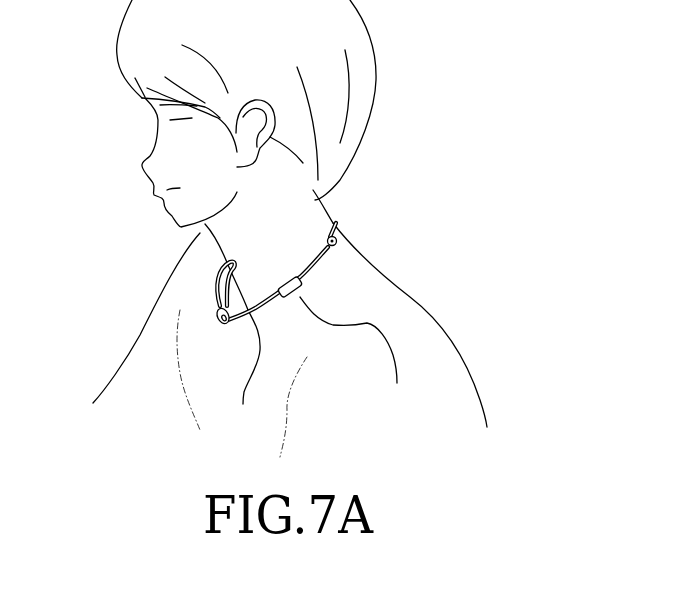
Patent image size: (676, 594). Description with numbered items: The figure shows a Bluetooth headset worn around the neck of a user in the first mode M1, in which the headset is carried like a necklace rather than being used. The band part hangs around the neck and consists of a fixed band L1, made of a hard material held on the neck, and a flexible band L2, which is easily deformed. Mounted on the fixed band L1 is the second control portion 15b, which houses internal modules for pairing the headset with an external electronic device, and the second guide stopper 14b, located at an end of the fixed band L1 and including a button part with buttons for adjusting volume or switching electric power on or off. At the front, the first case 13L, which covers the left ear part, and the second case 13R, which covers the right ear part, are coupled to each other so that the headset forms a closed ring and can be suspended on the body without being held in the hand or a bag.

The first mode M1 is at (492, 168).
The second case 13R is at (203, 302).
The first case 13L is at (210, 342).
The second guide stopper 14b is at (358, 356).
The second control portion 15b is at (335, 246).
The fixed band L1 is at (321, 272).
The flexible band L2 is at (246, 372).